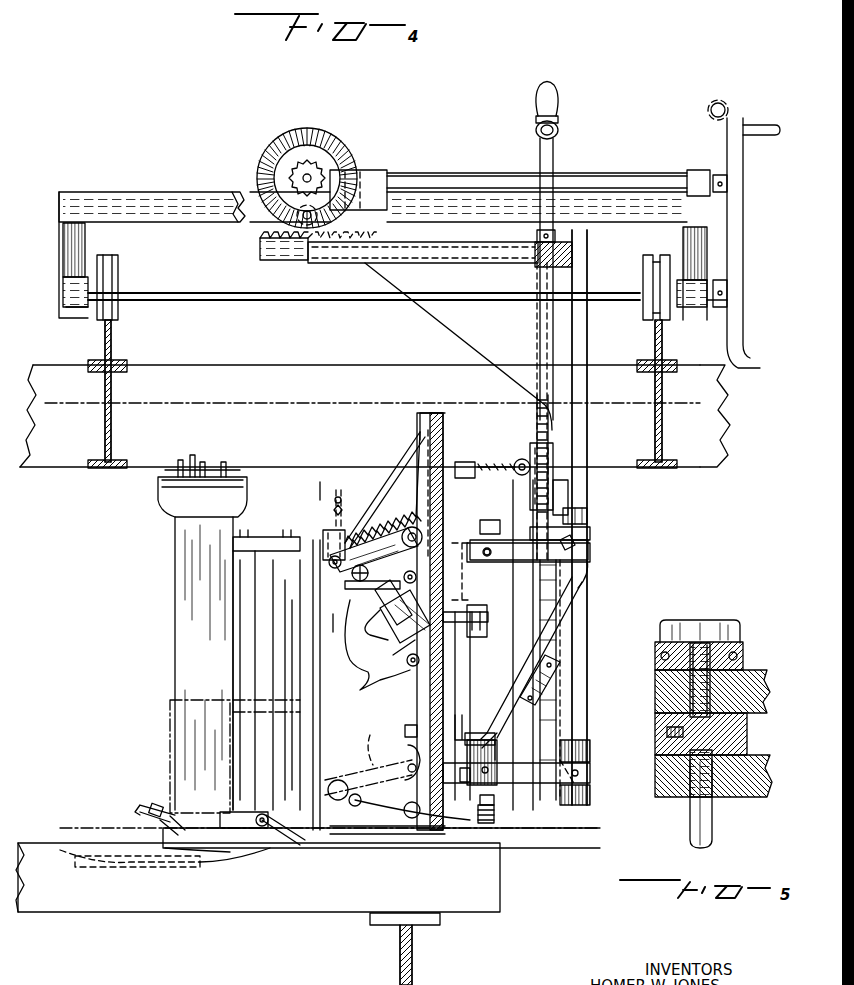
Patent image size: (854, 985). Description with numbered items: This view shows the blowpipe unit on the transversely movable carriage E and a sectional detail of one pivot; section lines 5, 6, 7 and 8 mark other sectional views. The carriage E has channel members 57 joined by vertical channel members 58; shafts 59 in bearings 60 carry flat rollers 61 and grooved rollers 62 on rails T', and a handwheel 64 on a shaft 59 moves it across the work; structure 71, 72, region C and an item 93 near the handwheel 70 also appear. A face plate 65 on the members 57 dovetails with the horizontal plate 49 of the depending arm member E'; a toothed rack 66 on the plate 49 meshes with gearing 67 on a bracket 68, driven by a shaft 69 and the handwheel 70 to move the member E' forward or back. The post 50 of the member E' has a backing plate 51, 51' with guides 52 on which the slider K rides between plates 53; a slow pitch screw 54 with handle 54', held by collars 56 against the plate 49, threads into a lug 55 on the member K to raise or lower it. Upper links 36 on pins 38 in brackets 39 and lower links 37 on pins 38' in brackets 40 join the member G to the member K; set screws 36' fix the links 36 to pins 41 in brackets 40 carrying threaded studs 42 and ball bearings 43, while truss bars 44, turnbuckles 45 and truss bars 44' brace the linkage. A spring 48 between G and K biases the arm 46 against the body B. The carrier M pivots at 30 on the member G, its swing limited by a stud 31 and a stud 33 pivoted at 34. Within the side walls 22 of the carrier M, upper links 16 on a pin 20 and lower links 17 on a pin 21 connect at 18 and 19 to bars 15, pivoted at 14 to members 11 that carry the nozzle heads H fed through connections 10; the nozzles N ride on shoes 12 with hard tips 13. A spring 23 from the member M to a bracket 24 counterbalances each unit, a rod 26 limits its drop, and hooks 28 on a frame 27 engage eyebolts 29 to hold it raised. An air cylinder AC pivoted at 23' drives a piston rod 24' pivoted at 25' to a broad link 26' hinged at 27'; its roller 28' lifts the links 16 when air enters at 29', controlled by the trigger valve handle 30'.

In FIG. 4, the carriage E is at (366, 233).
In FIG. 4, the channel members 57 is at (245, 197).
In FIG. 4, the gearing 67 is at (248, 186).
In FIG. 4, the bracket 68 is at (318, 160).
In FIG. 4, the shaft 69 is at (486, 186).
In FIG. 4, the handle 54' is at (568, 251).
In FIG. 4, the pivot circle 93 is at (722, 99).
In FIG. 4, the handwheel 70 is at (744, 170).
In FIG. 4, the vertical channel members 58 is at (63, 235).
In FIG. 4, the rollers 61 is at (108, 262).
In FIG. 4, the bearings 60 is at (70, 288).
In FIG. 4, the toothed rack 66 is at (262, 240).
In FIG. 4, the horizontal plate 49 is at (262, 252).
In FIG. 4, the shafts 59 is at (192, 294).
In FIG. 4, the face plate 65 is at (473, 264).
In FIG. 4, the collars 56 is at (558, 237).
In FIG. 4, the grooved rollers 62 is at (657, 258).
In FIG. 4, the handwheel 64 is at (742, 308).
In FIG. 4, the post 50 is at (588, 330).
In FIG. 4, the backing plate 51 is at (458, 346).
In FIG. 4, the backing plate 51' is at (586, 411).
In FIG. 4, the rails T' is at (381, 391).
In FIG. 4, the cross frame member 71 is at (105, 408).
In FIG. 4, the frame break 72 is at (726, 420).
In FIG. 4, the section line 6 is at (160, 402).
In FIG. 4, the carriage C is at (78, 458).
In FIG. 4, the section line 5 is at (362, 428).
In FIG. 4, the section line 8 is at (320, 492).
In FIG. 4, the section line 7 is at (72, 828).
In FIG. 4, the conduit connections 10 is at (192, 457).
In FIG. 4, the vertically extending member 11 is at (230, 522).
In FIG. 4, the nozzle head H is at (175, 592).
In FIG. 4, the pivotal connections 14 is at (300, 548).
In FIG. 4, the pivotal connection 18 is at (302, 588).
In FIG. 4, the vertically extending bars 15 is at (300, 690).
In FIG. 4, the side walls 22 is at (325, 725).
In FIG. 4, the nozzles N is at (155, 808).
In FIG. 4, the shoe 12 is at (226, 858).
In FIG. 4, the hard metal tip 13 is at (192, 858).
In FIG. 4, the valve handle 30' is at (271, 840).
In FIG. 4, the arm 46 is at (75, 866).
In FIG. 4, the metallic body B is at (495, 885).
In FIG. 4, the rod 26 is at (399, 832).
In FIG. 4, the bracket 24 is at (301, 522).
In FIG. 4, the hooks 28 is at (371, 481).
In FIG. 4, the rectangular open frame 27 is at (342, 483).
In FIG. 4, the roller 28' is at (363, 479).
In FIG. 4, the eyebolts 29 is at (355, 513).
In FIG. 4, the upper links 16 is at (410, 528).
In FIG. 4, the pin 20 is at (416, 495).
In FIG. 4, the vertically extending member G is at (455, 468).
In FIG. 4, the tension spring 23 is at (417, 602).
In FIG. 4, the channel member carrier M is at (445, 668).
In FIG. 4, the pivotal connection 25' is at (371, 592).
In FIG. 4, the pivotal connection 27' is at (416, 591).
In FIG. 4, the broad link 26' is at (368, 620).
In FIG. 4, the air cylinder AC is at (405, 647).
In FIG. 4, the piston rod 24' is at (386, 664).
In FIG. 4, the pivotal connection 23' is at (402, 671).
In FIG. 4, the air inlet 29' is at (377, 653).
In FIG. 4, the pin 21 is at (412, 745).
In FIG. 4, the lower links 17 is at (382, 741).
In FIG. 4, the pivotal connection 19 is at (372, 780).
In FIG. 4, the threaded stud 31 is at (450, 735).
In FIG. 4, the pivotal mounting 30 is at (470, 567).
In FIG. 4, the tension spring 48 is at (462, 460).
In FIG. 4, the vertical pin 38 is at (504, 450).
In FIG. 4, the guides 52 is at (530, 445).
In FIG. 4, the slow pitch screw 54 is at (522, 467).
In FIG. 4, the arm member E' is at (599, 517).
In FIG. 4, the lug 55 is at (560, 480).
In FIG. 4, the threaded studs 42 is at (590, 512).
In FIG. 5, the threaded studs 42 is at (700, 650).
In FIG. 4, the ball bearings 43 is at (590, 522).
In FIG. 5, the ball bearings 43 is at (738, 656).
In FIG. 4, the set screw 36' is at (556, 664).
In FIG. 5, the set screw 36' is at (651, 716).
In FIG. 4, the upper links 36 is at (588, 540).
In FIG. 5, the upper links 36 is at (719, 734).
In FIG. 4, the spaced brackets 40 is at (590, 560).
In FIG. 5, the spaced brackets 40 is at (750, 680).
In FIG. 4, the spaced brackets 39 is at (490, 785).
In FIG. 4, the second threaded stud 33 is at (468, 548).
In FIG. 4, the pivotal connection 34 is at (490, 615).
In FIG. 4, the frame member slider K is at (515, 620).
In FIG. 4, the vertically extending plates 53 is at (590, 600).
In FIG. 4, the truss bars 44 is at (563, 649).
In FIG. 5, the truss bars 44 is at (724, 805).
In FIG. 4, the turnbuckles 45 is at (548, 698).
In FIG. 4, the truss bars 44' is at (516, 724).
In FIG. 4, the lower links 37 is at (592, 770).
In FIG. 4, the vertical pin 38' is at (596, 788).
In FIG. 4, the vertical pin 41 is at (548, 680).
In FIG. 5, the vertical pin 41 is at (712, 790).